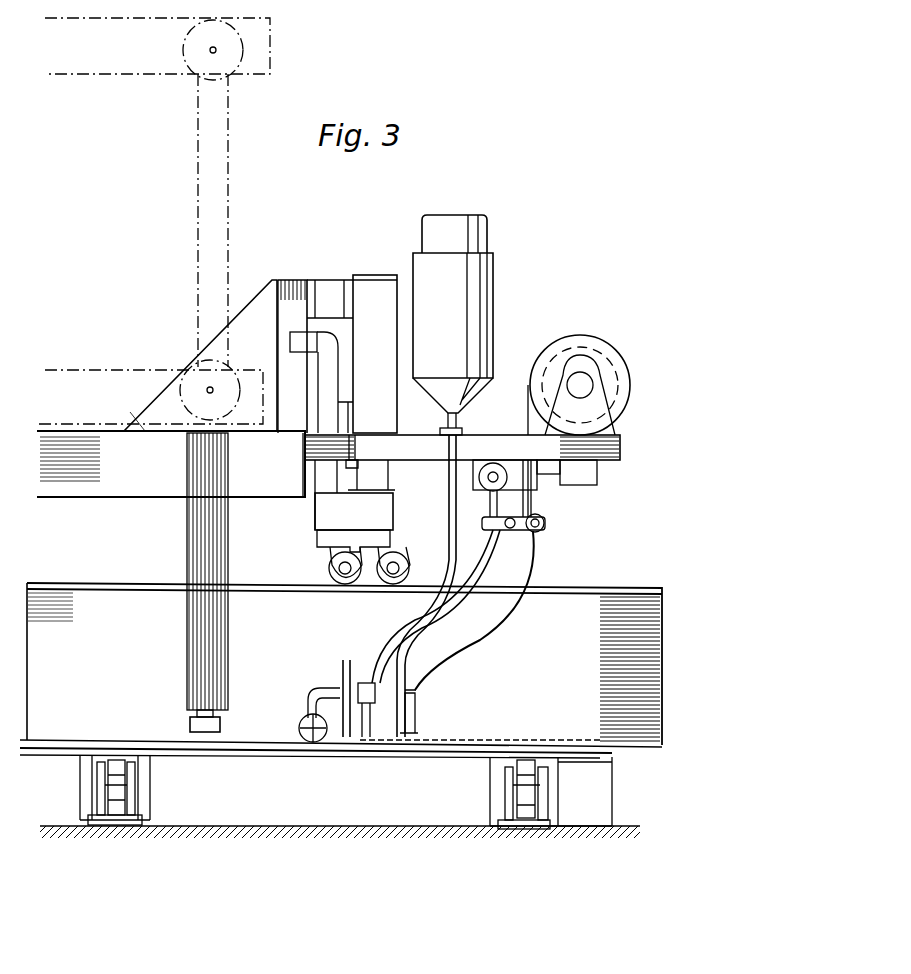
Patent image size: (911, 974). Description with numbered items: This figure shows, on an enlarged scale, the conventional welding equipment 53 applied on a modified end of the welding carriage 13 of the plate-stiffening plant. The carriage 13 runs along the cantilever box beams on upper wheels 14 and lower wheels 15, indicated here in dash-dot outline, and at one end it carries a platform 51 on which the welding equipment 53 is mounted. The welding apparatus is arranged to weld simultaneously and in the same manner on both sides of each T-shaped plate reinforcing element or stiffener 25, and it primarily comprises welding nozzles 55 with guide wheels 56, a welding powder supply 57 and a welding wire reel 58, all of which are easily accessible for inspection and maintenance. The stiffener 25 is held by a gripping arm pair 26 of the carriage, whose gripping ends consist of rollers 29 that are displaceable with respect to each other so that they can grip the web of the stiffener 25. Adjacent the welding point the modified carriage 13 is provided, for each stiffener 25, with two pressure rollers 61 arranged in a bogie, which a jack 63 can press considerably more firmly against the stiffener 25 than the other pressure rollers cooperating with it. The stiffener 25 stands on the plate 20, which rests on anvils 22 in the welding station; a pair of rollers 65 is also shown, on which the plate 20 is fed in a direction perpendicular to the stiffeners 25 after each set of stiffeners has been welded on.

The carriage 13 is at (200, 325).
The upper wheels 14 is at (205, 72).
The lower wheels 15 is at (230, 372).
The plate 20 is at (238, 748).
The anvils 22 is at (60, 805).
The plate reinforcing element 25 is at (597, 593).
The gripping arm pair 26 is at (188, 622).
The rollers 29 is at (190, 723).
The platform 51 is at (618, 456).
The welding equipment 53 is at (535, 278).
The welding nozzle 55 is at (360, 740).
The guide wheel 56 is at (302, 726).
The welding powder supply 57 is at (500, 268).
The welding wire reel 58 is at (612, 342).
The pressure rollers 61 is at (335, 553).
The jack 63 is at (370, 290).
The rollers 65 is at (118, 805).